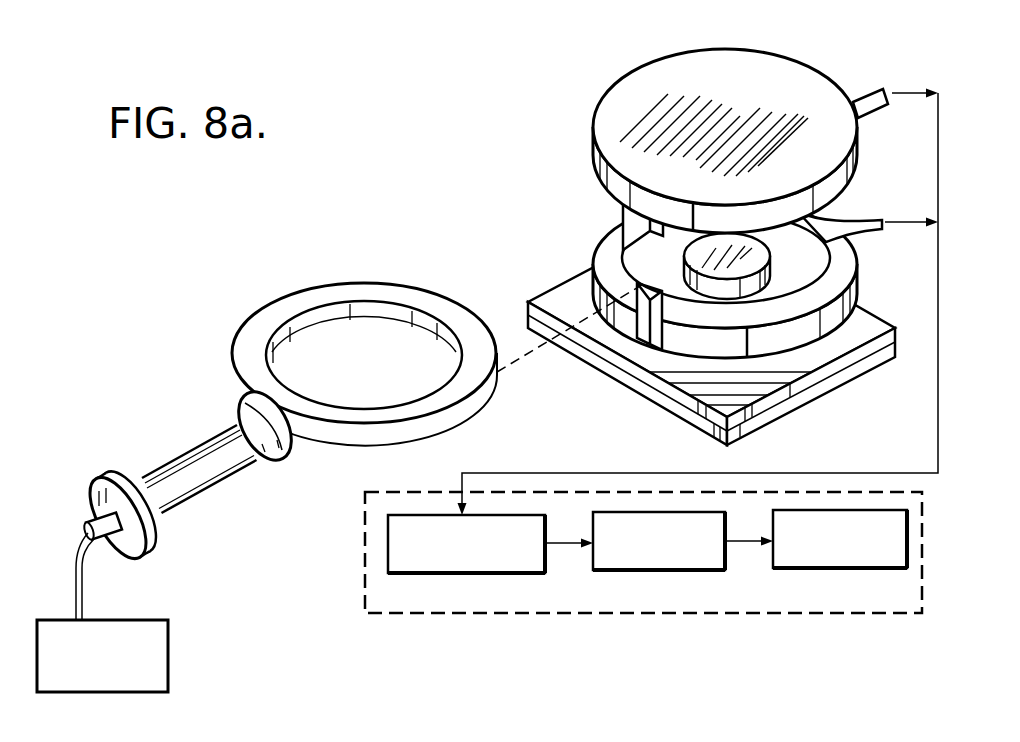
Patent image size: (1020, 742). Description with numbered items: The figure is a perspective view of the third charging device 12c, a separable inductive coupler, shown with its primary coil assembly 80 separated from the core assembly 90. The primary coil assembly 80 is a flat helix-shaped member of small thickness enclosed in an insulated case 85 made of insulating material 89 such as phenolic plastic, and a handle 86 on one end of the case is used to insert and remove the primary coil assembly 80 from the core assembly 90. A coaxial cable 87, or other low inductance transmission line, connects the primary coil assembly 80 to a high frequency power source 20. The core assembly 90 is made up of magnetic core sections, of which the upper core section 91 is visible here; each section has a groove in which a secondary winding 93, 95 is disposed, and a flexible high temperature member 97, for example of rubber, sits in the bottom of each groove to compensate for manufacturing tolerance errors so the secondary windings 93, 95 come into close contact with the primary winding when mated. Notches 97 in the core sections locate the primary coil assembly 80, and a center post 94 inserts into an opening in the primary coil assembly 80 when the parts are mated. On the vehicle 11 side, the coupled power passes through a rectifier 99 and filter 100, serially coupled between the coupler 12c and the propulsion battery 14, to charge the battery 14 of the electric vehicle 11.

The third charging device 12c is at (425, 136).
The primary coil assembly 80 is at (232, 283).
The insulated case 85 is at (230, 362).
The handle 86 is at (189, 450).
The coaxial cable 87 is at (103, 545).
The insulating material 89 is at (478, 385).
The core assembly 90 is at (551, 42).
The upper core section 91 is at (808, 85).
The secondary winding 93 is at (852, 223).
The center post 94 is at (690, 259).
The secondary winding 95 is at (884, 108).
The flexible high temperature member 97 is at (640, 208).
The rectifier 99 is at (545, 568).
The filter 100 is at (740, 587).
The propulsion battery 14 is at (903, 568).
The electric vehicle 11 is at (632, 577).
The power source 20 is at (168, 618).